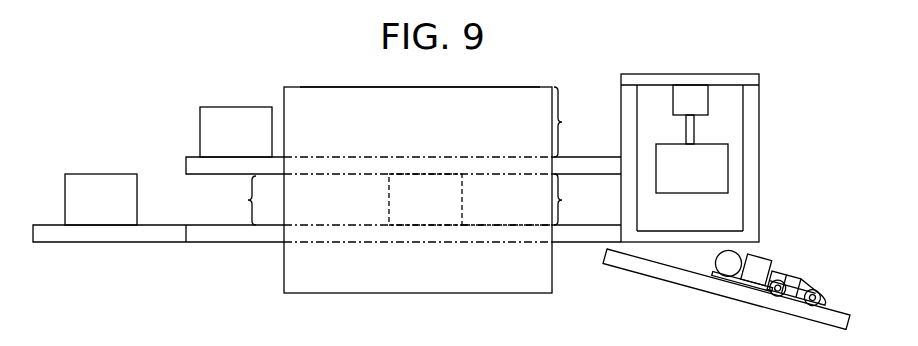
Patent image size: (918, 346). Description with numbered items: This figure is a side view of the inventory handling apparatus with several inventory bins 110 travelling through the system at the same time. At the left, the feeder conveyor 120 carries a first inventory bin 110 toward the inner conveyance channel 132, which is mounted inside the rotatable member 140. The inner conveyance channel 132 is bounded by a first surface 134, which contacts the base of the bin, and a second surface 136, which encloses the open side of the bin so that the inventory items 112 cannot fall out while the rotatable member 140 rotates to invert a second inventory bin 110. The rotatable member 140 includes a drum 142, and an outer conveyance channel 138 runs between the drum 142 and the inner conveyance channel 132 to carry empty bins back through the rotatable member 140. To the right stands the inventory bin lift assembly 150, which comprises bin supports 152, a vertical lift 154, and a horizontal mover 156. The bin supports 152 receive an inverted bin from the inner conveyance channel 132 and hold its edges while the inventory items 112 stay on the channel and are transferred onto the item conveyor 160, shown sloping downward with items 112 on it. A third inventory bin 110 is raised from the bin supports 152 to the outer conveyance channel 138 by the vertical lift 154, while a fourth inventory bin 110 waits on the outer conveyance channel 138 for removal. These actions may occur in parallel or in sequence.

The inventory bin 110 is at (115, 208).
The inventory items 112 is at (800, 268).
The feeder conveyor 120 is at (105, 245).
The inner conveyance channel 132 is at (408, 199).
The first surface 134 is at (358, 174).
The second surface 136 is at (465, 225).
The outer conveyance channel 138 is at (576, 122).
The rotatable member 140 is at (319, 87).
The drum 142 is at (483, 87).
The inventory bin lift assembly 150 is at (760, 78).
The bin supports 152 is at (735, 237).
The vertical lift 154 is at (694, 127).
The horizontal mover 156 is at (708, 100).
The item conveyor 160 is at (825, 313).